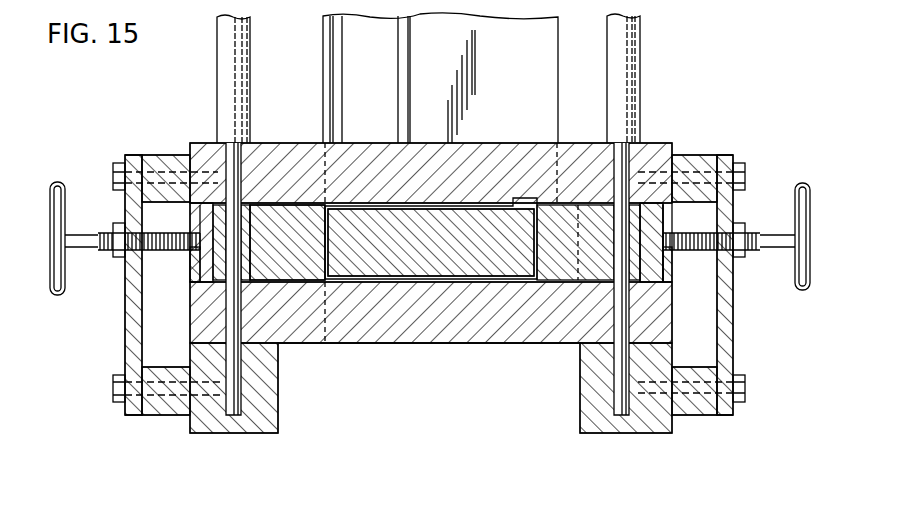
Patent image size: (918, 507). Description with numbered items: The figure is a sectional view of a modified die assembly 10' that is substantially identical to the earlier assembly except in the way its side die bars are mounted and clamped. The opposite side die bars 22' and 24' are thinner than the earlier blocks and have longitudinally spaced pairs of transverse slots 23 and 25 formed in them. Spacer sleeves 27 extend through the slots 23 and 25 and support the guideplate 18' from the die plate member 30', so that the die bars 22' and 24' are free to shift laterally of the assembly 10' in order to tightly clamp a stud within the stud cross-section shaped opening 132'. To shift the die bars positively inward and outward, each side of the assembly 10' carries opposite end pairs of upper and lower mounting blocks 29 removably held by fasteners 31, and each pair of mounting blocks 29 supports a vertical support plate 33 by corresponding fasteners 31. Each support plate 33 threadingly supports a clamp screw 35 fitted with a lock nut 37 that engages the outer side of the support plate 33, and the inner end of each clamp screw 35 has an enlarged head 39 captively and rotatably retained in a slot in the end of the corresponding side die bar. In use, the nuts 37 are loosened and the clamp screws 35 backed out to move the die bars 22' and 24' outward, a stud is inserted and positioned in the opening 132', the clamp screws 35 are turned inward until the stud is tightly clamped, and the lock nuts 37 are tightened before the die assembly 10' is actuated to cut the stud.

The die assembly 10' is at (478, 78).
The guideplate 18' is at (471, 258).
The side die bar 22' is at (718, 271).
The transverse slot 23 is at (570, 282).
The side die bar 24' is at (198, 270).
The transverse slot 25 is at (292, 262).
The spacer sleeve 27 is at (243, 232).
The mounting block 29 is at (170, 153).
The die plate member 30' is at (757, 285).
The fastener 31 is at (113, 168).
The vertical support plate 33 is at (128, 345).
The clamp screw 35 is at (88, 252).
The lock nut 37 is at (120, 258).
The enlarged head 39 is at (200, 225).
The stud cross-section shaped opening 132' is at (431, 299).